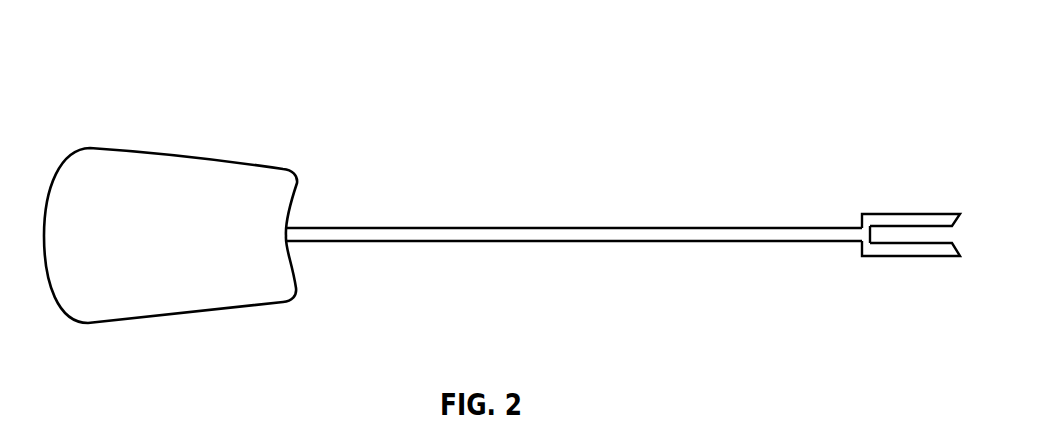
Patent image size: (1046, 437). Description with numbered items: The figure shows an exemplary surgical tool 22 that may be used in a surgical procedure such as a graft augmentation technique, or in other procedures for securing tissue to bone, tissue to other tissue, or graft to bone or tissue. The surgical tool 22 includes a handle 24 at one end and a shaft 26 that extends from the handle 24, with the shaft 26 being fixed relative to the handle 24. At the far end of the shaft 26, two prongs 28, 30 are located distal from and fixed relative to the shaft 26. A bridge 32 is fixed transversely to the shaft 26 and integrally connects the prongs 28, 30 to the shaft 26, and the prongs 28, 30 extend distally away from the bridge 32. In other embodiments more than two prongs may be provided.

The surgical tool 22 is at (134, 60).
The handle 24 is at (170, 297).
The shaft 26 is at (412, 232).
The prong 28 is at (928, 218).
The prong 30 is at (902, 253).
The bridge 32 is at (866, 222).